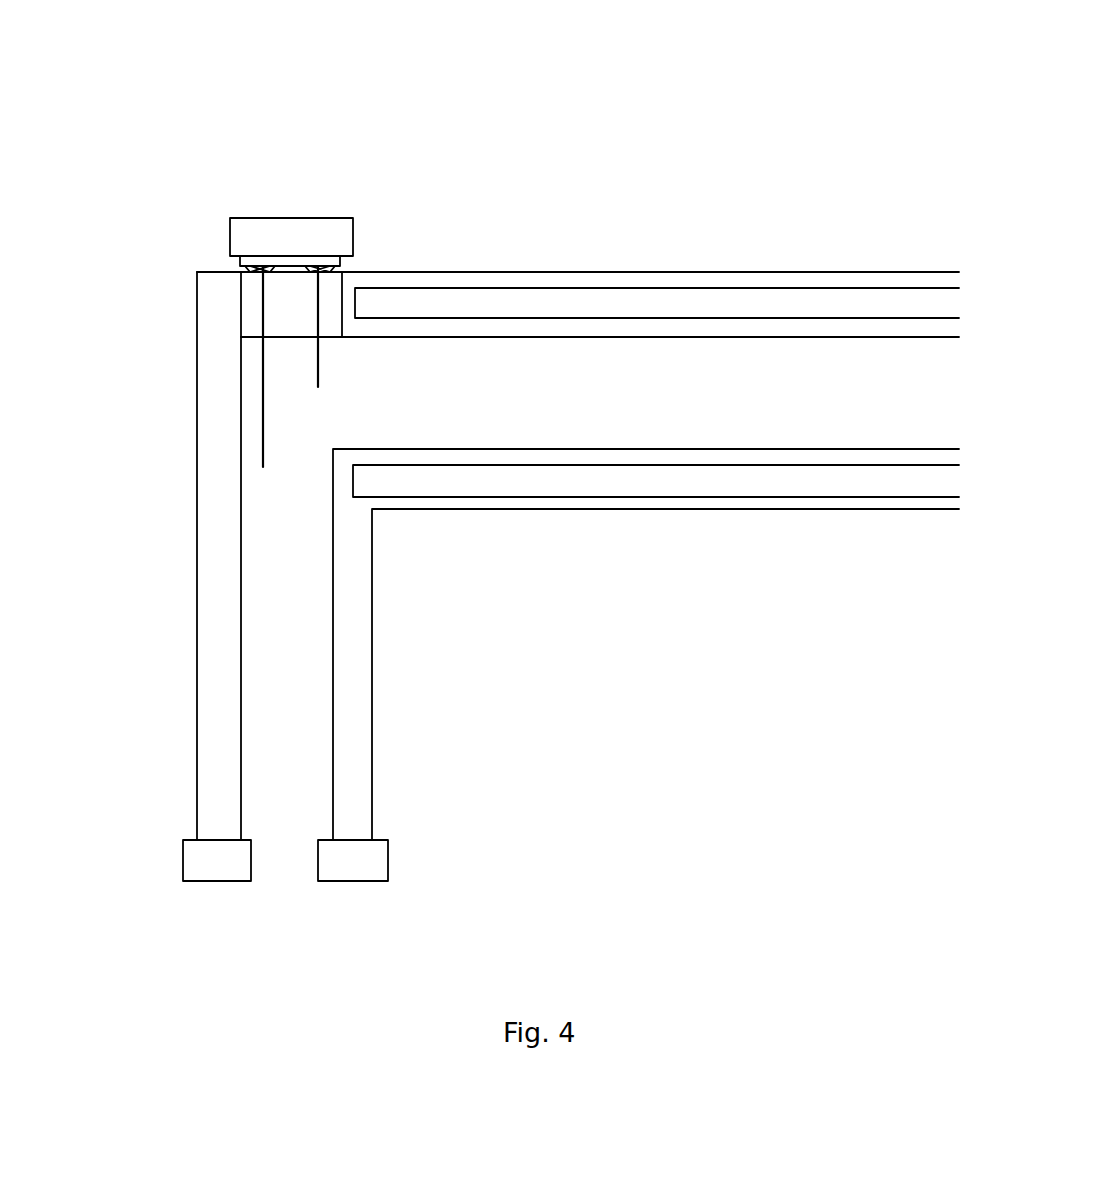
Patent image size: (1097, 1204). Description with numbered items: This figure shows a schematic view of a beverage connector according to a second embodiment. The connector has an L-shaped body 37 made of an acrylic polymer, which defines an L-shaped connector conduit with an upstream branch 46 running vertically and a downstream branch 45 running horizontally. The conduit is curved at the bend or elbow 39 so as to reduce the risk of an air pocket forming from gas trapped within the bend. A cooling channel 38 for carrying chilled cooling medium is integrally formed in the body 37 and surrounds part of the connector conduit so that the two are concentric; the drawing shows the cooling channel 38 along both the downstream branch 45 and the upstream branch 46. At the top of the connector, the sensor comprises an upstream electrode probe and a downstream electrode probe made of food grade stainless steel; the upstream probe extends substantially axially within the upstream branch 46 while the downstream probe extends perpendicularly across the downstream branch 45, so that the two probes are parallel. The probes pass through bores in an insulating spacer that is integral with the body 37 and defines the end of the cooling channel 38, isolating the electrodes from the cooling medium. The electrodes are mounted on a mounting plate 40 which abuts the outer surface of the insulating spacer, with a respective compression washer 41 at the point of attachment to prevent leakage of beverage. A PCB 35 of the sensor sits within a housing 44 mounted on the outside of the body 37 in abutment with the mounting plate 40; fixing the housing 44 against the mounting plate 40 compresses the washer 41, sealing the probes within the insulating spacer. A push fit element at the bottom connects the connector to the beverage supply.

The housing 44 is at (230, 230).
The bend/elbow 39 is at (240, 352).
The L-shaped body 37 is at (197, 512).
The upstream branch 46 is at (259, 645).
The compression washer 41 is at (263, 265).
The PCB 35 is at (296, 258).
The mounting plate 40 is at (312, 255).
The cooling channel 38 is at (652, 298).
The downstream branch 45 is at (775, 368).